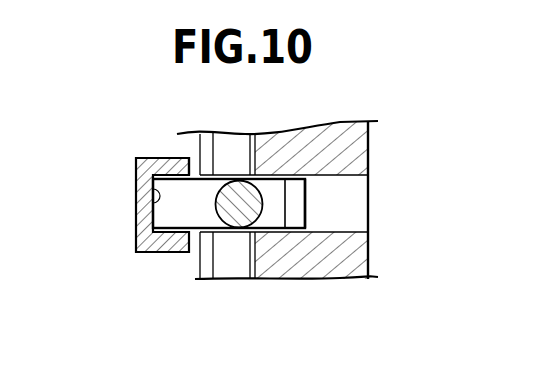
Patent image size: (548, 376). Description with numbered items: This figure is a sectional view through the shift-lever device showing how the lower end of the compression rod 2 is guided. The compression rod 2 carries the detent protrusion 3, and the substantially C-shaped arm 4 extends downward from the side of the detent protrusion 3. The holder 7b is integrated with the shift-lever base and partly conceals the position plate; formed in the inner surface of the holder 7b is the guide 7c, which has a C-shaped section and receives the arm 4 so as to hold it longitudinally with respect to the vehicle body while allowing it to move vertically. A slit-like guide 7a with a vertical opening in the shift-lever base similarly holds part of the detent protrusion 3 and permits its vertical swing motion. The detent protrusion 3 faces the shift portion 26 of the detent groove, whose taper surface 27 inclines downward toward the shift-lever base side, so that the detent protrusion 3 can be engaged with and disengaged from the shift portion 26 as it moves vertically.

The compression rod 2 is at (242, 212).
The detent protrusion 3 is at (300, 202).
The arm 4 is at (175, 212).
The guide 7a is at (337, 229).
The holder 7b is at (137, 238).
The guide 7c is at (134, 175).
The shift portion 26 is at (205, 258).
The taper surface 27 is at (255, 253).